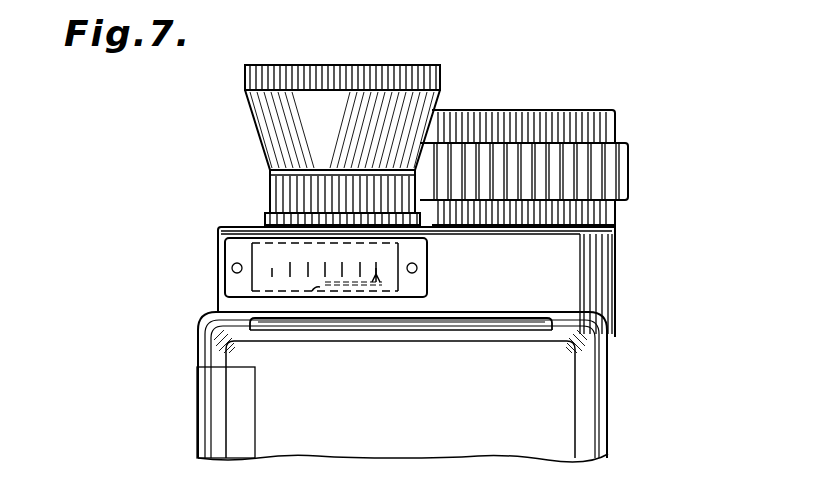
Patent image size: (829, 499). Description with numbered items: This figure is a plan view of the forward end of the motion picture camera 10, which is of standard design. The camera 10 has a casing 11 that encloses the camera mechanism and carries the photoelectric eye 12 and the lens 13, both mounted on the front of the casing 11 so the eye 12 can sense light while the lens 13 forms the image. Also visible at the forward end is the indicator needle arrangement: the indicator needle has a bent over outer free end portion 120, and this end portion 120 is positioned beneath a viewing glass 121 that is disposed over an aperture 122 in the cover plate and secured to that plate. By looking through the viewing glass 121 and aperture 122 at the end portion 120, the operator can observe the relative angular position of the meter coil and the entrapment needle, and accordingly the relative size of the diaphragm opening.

The motion picture camera 10 is at (675, 253).
The casing 11 is at (200, 416).
The photoelectric eye 12 is at (550, 94).
The lens 13 is at (378, 49).
The bent over outer free end portion 120 is at (400, 280).
The viewing glass 121 is at (398, 259).
The aperture 122 is at (319, 293).